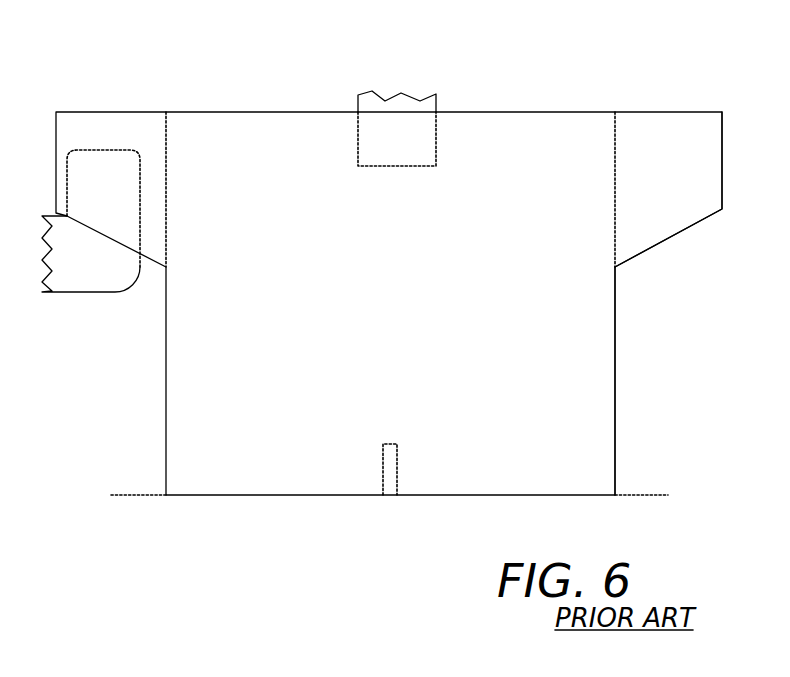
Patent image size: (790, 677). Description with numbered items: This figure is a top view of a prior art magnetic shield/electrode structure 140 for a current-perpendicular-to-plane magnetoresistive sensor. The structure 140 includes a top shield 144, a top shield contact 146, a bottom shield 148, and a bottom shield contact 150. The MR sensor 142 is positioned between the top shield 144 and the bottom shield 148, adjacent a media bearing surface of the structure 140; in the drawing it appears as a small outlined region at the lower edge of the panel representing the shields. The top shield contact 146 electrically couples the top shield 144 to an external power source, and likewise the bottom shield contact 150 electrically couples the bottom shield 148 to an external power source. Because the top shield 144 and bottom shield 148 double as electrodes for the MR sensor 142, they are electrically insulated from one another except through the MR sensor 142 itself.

The magnetic shield/electrode structure 140 is at (640, 87).
The MR sensor 142 is at (391, 487).
The top shield 144 is at (655, 232).
The top shield contact 146 is at (113, 272).
The bottom shield 148 is at (580, 395).
The bottom shield contact 150 is at (398, 105).